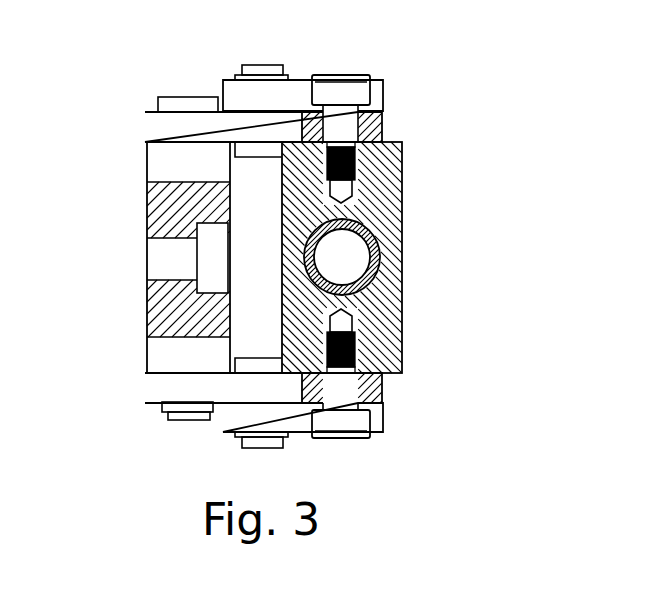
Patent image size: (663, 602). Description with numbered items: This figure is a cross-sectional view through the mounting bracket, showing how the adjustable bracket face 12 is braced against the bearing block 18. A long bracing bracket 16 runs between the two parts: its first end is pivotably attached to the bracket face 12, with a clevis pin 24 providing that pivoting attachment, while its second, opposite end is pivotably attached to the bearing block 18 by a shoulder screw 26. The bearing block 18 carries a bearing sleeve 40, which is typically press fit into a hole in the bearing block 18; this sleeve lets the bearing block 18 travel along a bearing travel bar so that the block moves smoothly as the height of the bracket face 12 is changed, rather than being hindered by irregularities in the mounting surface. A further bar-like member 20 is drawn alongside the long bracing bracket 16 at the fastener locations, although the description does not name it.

The bracket face 12 is at (145, 200).
The long bracing bracket 16 is at (223, 122).
The bearing block 18 is at (402, 183).
The clamp bar 20 is at (298, 84).
The clevis pin 24 is at (263, 65).
The shoulder screw 26 is at (367, 93).
The bearing sleeve 40 is at (377, 247).